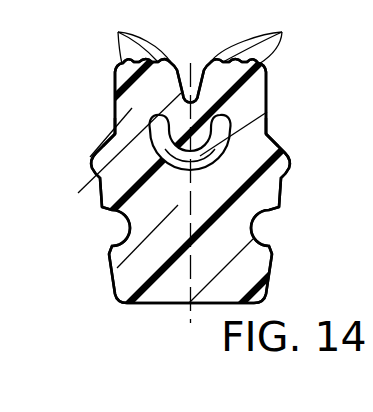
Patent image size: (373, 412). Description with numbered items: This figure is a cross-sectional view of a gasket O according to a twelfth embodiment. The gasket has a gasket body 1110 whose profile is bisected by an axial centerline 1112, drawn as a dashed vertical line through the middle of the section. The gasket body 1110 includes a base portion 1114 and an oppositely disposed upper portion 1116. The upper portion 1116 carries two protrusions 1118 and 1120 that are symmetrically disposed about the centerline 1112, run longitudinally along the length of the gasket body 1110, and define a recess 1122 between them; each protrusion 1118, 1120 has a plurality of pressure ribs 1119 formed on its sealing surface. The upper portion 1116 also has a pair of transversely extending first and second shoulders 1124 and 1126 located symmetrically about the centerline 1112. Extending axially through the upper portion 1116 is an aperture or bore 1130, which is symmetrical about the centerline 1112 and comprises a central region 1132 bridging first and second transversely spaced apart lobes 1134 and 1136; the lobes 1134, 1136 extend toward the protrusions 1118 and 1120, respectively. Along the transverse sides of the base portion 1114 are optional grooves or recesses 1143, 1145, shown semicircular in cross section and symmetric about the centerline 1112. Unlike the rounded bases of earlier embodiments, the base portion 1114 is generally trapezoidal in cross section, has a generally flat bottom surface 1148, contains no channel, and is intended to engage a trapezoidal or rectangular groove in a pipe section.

The gasket body 1110 is at (88, 224).
The axial centerline 1112 is at (189, 318).
The base portion 1114 is at (127, 279).
The upper portion 1116 is at (116, 134).
The protrusion 1118 is at (119, 86).
The pressure ribs 1119 is at (118, 32).
The protrusion 1120 is at (252, 87).
The recess 1122 is at (191, 97).
The first shoulder 1124 is at (93, 164).
The second shoulder 1126 is at (291, 165).
The aperture or bore 1130 is at (106, 149).
The central region 1132 is at (202, 158).
The first lobe 1134 is at (163, 129).
The second lobe 1136 is at (219, 117).
The groove or recess 1143 is at (108, 246).
The right notch 1145 is at (265, 250).
The bottom surface 1148 is at (150, 304).
The gasket O is at (330, 197).